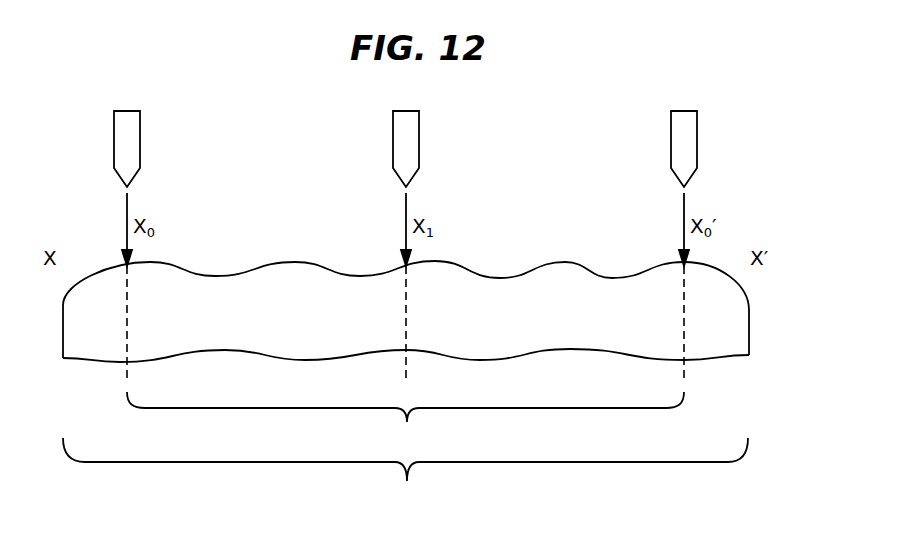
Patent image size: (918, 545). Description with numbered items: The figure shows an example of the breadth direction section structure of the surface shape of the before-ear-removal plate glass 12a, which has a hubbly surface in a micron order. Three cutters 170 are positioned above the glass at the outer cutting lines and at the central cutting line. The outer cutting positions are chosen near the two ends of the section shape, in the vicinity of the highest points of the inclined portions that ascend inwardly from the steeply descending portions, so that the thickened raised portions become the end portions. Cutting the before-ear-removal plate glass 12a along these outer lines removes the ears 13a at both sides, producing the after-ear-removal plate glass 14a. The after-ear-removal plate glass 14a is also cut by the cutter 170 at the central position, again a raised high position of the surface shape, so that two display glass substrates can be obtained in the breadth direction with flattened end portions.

The cutter 170 is at (142, 140).
The ears 13a is at (742, 315).
The after-ear-removal plate glass 14a is at (405, 421).
The before-ear-removal plate glass 12a is at (405, 475).